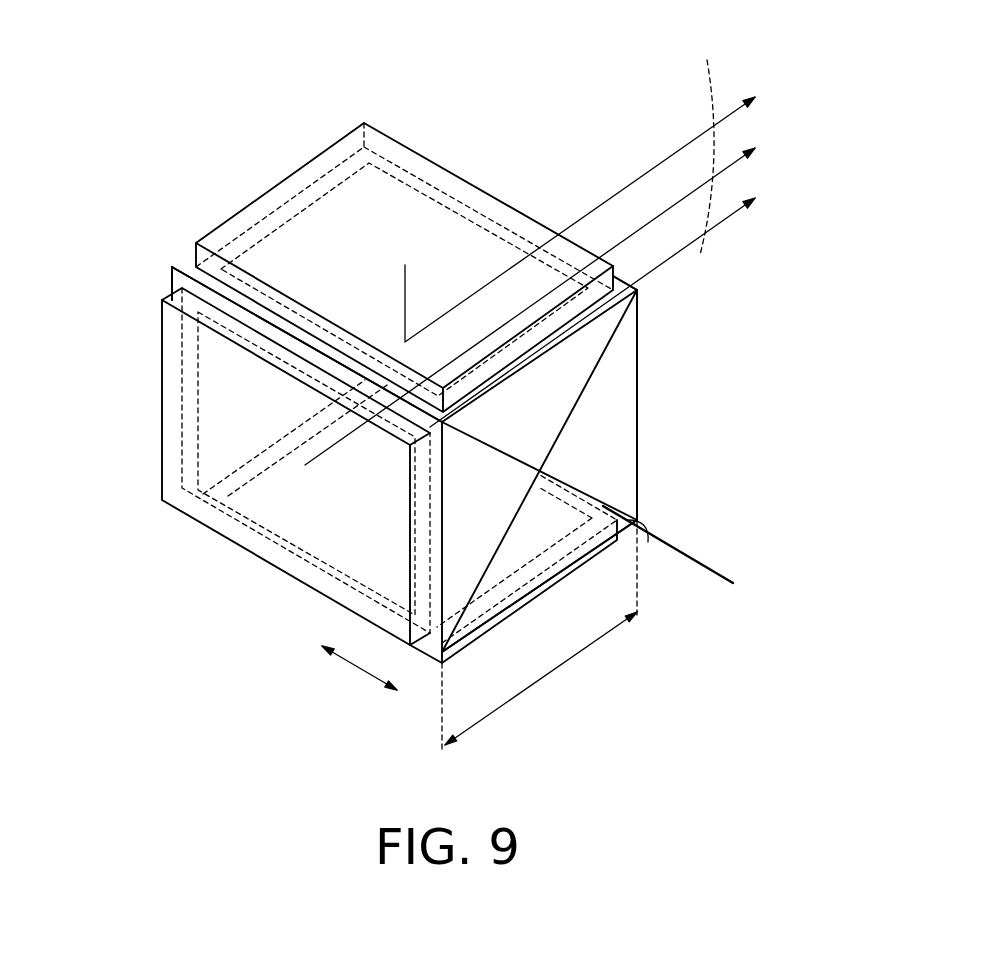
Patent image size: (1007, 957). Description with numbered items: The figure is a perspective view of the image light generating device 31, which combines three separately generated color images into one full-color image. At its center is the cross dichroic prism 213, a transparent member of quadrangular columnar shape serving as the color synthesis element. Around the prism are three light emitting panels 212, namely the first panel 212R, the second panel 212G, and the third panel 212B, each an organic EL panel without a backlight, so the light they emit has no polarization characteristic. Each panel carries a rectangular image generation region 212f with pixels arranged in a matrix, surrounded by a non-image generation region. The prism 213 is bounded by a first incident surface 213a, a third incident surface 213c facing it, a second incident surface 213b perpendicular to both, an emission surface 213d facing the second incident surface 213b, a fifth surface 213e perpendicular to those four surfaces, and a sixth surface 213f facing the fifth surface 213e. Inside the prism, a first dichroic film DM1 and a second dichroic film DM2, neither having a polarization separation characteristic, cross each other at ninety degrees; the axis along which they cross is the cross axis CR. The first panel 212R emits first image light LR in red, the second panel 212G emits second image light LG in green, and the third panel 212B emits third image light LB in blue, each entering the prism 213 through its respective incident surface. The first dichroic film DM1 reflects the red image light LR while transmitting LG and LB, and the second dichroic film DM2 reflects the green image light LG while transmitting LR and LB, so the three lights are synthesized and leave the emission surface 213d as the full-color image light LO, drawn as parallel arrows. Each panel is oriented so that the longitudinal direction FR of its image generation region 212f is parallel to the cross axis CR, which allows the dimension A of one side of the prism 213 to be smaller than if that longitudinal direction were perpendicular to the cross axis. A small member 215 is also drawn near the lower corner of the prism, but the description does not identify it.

The image light generating device 31 is at (415, 107).
The cross dichroic prism 213 is at (668, 417).
The first incident surface 213a is at (622, 532).
The second incident surface 213b is at (160, 292).
The third incident surface 213c is at (190, 262).
The emission surface 213d is at (473, 187).
The fifth surface 213e is at (618, 356).
The sixth surface 213f is at (172, 258).
The light emitting panel 212 is at (406, 418).
The third panel 212B is at (323, 207).
The second panel 212G is at (275, 505).
The first panel 212R is at (490, 636).
The image generation region 212f is at (293, 232).
The fixing member 215 is at (650, 525).
The first dichroic film DM1 is at (622, 328).
The second dichroic film DM2 is at (605, 490).
The third image light LB is at (675, 155).
The second image light LG is at (643, 227).
The first image light LR is at (660, 264).
The image light in full color LO is at (718, 143).
The cross axis CR is at (705, 558).
The longitudinal direction of the image generation region FR is at (359, 675).
The dimension of one side of the cross dichroic prism A is at (539, 636).